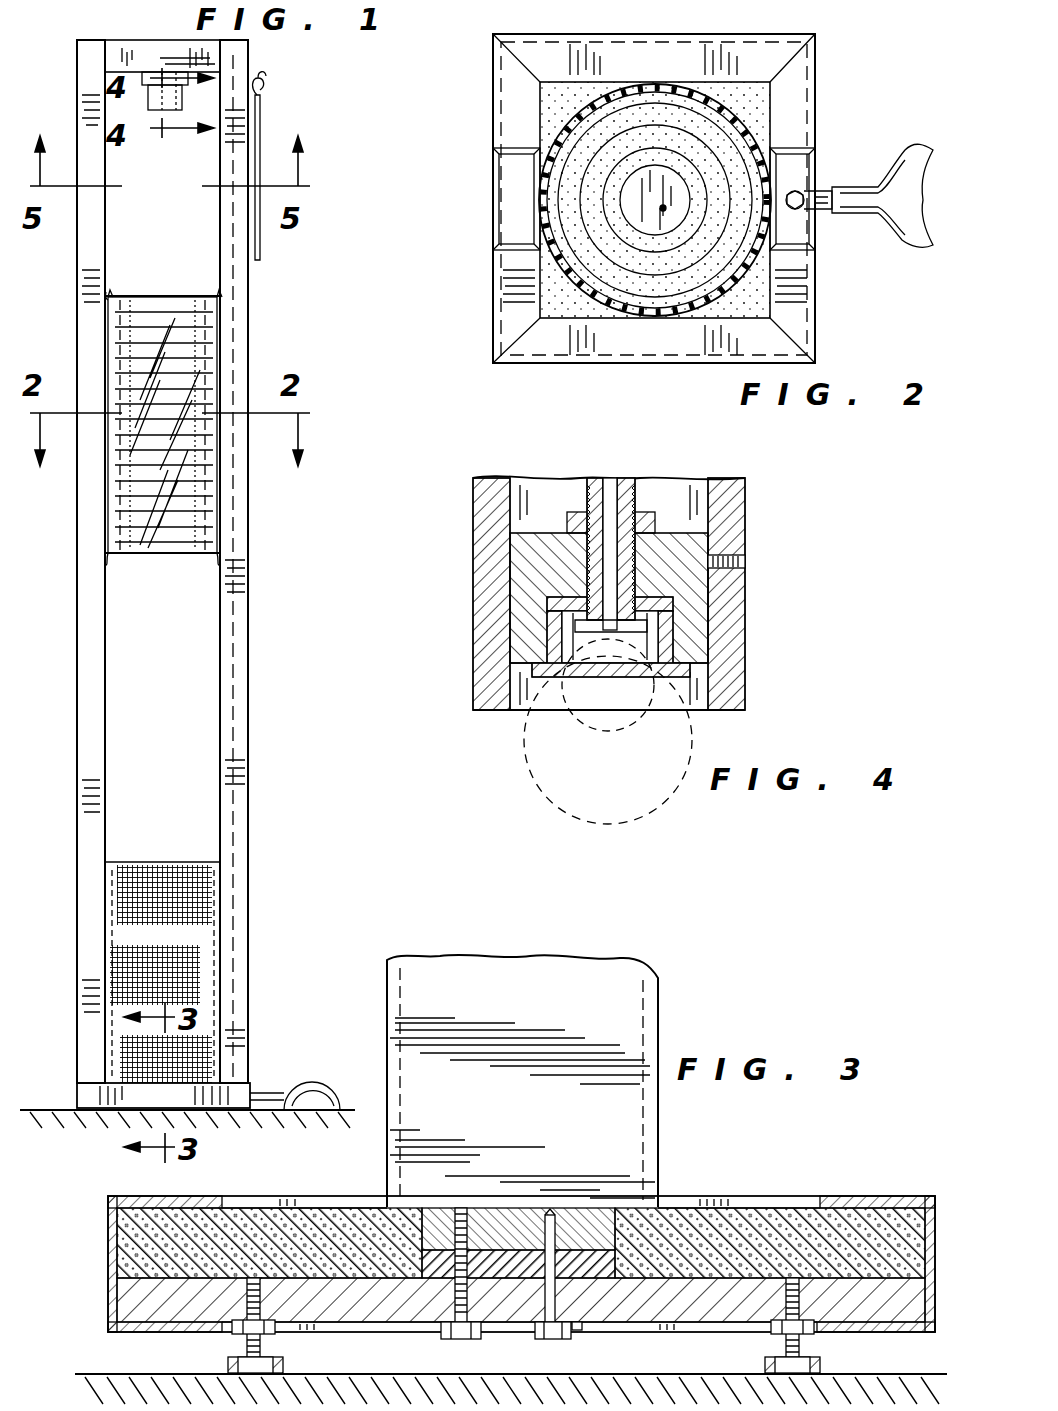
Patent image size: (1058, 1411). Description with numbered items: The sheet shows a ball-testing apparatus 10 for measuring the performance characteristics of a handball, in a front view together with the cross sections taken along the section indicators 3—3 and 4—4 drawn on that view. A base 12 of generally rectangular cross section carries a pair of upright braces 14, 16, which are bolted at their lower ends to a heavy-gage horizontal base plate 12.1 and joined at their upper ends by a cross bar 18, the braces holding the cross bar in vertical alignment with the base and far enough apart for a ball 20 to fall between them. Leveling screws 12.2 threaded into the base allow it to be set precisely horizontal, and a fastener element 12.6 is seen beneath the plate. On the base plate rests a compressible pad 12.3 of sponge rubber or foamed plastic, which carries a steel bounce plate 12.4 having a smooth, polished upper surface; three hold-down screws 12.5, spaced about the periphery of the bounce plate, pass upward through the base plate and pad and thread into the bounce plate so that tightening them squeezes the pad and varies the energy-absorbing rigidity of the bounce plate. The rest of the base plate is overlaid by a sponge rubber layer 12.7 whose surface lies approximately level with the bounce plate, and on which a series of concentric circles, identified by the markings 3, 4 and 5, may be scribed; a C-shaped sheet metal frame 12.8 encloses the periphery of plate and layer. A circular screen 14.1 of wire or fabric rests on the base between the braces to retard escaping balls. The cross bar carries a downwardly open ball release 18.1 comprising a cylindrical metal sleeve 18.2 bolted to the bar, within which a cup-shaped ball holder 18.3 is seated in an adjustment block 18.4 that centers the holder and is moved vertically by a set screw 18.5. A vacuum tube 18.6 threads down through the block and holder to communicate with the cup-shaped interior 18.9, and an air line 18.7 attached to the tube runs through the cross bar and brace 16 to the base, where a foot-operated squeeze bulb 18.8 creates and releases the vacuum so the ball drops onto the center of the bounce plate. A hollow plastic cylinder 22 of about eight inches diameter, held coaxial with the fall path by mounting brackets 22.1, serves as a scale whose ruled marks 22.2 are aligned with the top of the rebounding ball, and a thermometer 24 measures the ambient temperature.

In FIG. 1, the apparatus 10 is at (275, 582).
In FIG. 1, the base 12 is at (78, 1088).
In FIG. 2, the base 12 is at (642, 220).
In FIG. 3, the base 12 is at (491, 1261).
In FIG. 3, the base plate 12.1 is at (200, 1300).
In FIG. 3, the leveling screws 12.2 is at (262, 1345).
In FIG. 3, the pad 12.3 is at (445, 1272).
In FIG. 2, the bounce plate 12.4 is at (658, 215).
In FIG. 3, the bounce plate 12.4 is at (495, 1210).
In FIG. 2, the hold-down screws 12.5 is at (628, 205).
In FIG. 3, the hold-down screws 12.5 is at (465, 1340).
In FIG. 3, the nut 12.6 is at (578, 1332).
In FIG. 2, the layer 12.7 is at (770, 302).
In FIG. 3, the layer 12.7 is at (703, 1212).
In FIG. 2, the sheet metal frame 12.8 is at (526, 363).
In FIG. 3, the sheet metal frame 12.8 is at (840, 1196).
In FIG. 1, the upright brace 14 is at (108, 700).
In FIG. 2, the upright brace 14 is at (510, 250).
In FIG. 3, the upright brace 14 is at (635, 967).
In FIG. 1, the circular screen 14.1 is at (195, 862).
In FIG. 1, the upright brace 16 is at (220, 697).
In FIG. 2, the upright brace 16 is at (790, 255).
In FIG. 1, the cross bar 18 is at (108, 40).
In FIG. 1, the plug valve 18.1 is at (148, 98).
In FIG. 4, the plug valve 18.1 is at (778, 579).
In FIG. 4, the cylindrical metal sleeve 18.2 is at (745, 630).
In FIG. 4, the ball holder 18.3 is at (540, 678).
In FIG. 4, the adjustment block 18.4 is at (708, 642).
In FIG. 4, the set screw 18.5 is at (745, 552).
In FIG. 4, the vacuum tube 18.6 is at (611, 478).
In FIG. 1, the air line 18.7 is at (237, 730).
In FIG. 1, the squeeze bulb 18.8 is at (298, 1090).
In FIG. 2, the squeeze bulb 18.8 is at (907, 157).
In FIG. 4, the ball seat 18.9 is at (612, 750).
In FIG. 4, the ball 20 is at (575, 825).
In FIG. 1, the cylinder 22 is at (163, 408).
In FIG. 2, the cylinder 22 is at (575, 102).
In FIG. 1, the mounting brackets 22.1 is at (215, 560).
In FIG. 1, the ruled marks 22.2 is at (188, 297).
In FIG. 1, the thermometer 24 is at (262, 140).
In FIG. 2, the ring layer 3 is at (596, 201).
In FIG. 2, the ring layer 4 is at (579, 201).
In FIG. 2, the ring layer 5 is at (562, 201).